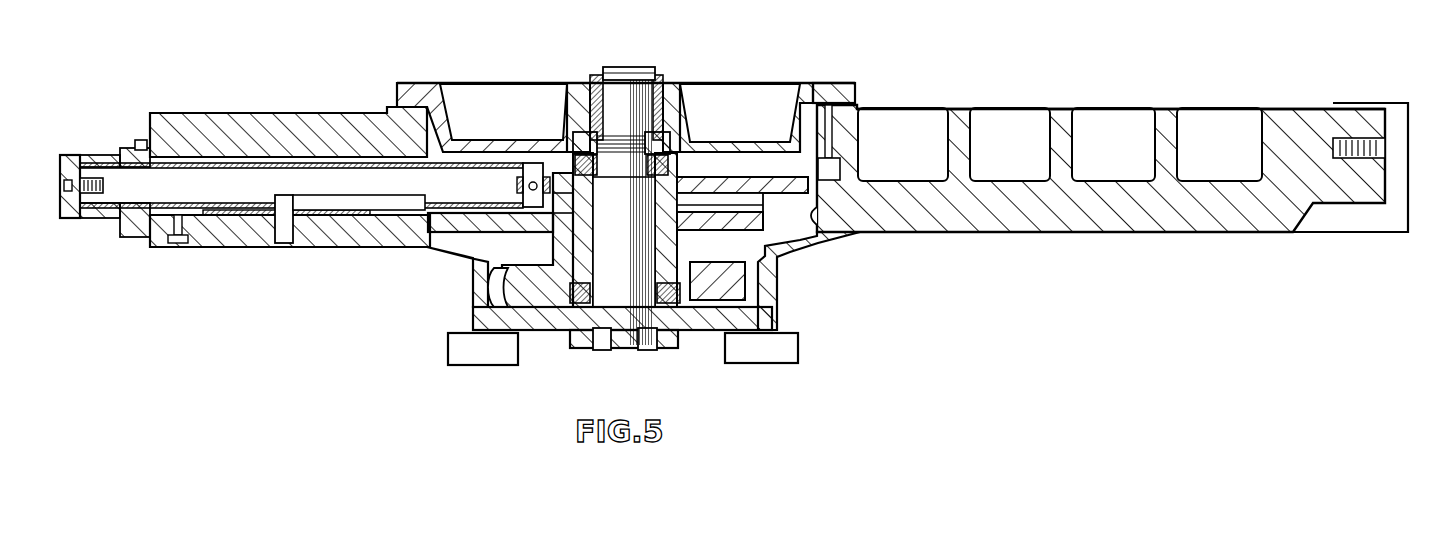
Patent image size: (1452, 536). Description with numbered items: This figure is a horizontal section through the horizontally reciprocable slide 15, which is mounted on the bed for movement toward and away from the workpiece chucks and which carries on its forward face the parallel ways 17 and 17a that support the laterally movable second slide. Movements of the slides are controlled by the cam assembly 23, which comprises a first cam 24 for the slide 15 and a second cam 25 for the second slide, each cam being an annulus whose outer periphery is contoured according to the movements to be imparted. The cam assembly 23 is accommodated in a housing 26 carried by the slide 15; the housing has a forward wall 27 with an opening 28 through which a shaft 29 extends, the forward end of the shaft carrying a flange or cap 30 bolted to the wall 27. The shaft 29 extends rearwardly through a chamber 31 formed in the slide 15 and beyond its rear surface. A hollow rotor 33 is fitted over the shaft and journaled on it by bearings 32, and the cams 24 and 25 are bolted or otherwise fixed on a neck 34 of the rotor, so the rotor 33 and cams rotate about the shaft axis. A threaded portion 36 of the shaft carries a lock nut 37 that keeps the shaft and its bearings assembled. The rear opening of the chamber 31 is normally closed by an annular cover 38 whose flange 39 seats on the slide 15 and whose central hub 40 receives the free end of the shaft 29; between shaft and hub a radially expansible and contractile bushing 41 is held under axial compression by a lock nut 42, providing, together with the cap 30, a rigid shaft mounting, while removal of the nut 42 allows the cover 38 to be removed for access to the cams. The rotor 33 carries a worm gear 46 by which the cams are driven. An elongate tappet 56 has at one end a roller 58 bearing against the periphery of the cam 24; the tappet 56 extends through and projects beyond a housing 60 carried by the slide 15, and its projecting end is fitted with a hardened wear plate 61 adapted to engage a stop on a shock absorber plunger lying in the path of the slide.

The slide 15 is at (1100, 232).
The parallel way 17 is at (478, 356).
The parallel way 17a is at (752, 355).
The cam assembly 23 is at (452, 262).
The first cam 24 is at (780, 182).
The second cam 25 is at (710, 226).
The housing 26 is at (777, 313).
The forward wall 27 is at (540, 332).
The opening 28 is at (592, 338).
The shaft 29 is at (616, 226).
The flange or cap 30 is at (663, 338).
The chamber 31 is at (830, 238).
The bearings 32 is at (670, 166).
The hollow rotor 33 is at (553, 245).
The neck 34 is at (700, 203).
The threaded portion 36 is at (590, 148).
The lock nut 37 is at (652, 148).
The annular cover 38 is at (735, 83).
The flange 39 is at (830, 88).
The central hub 40 is at (665, 88).
The bushing 41 is at (650, 82).
The lock nut 42 is at (590, 85).
The worm gear 46 is at (500, 285).
The tappet 56 is at (115, 225).
The roller 58 is at (525, 188).
The housing 60 is at (228, 249).
The hardened wear plate 61 is at (78, 157).